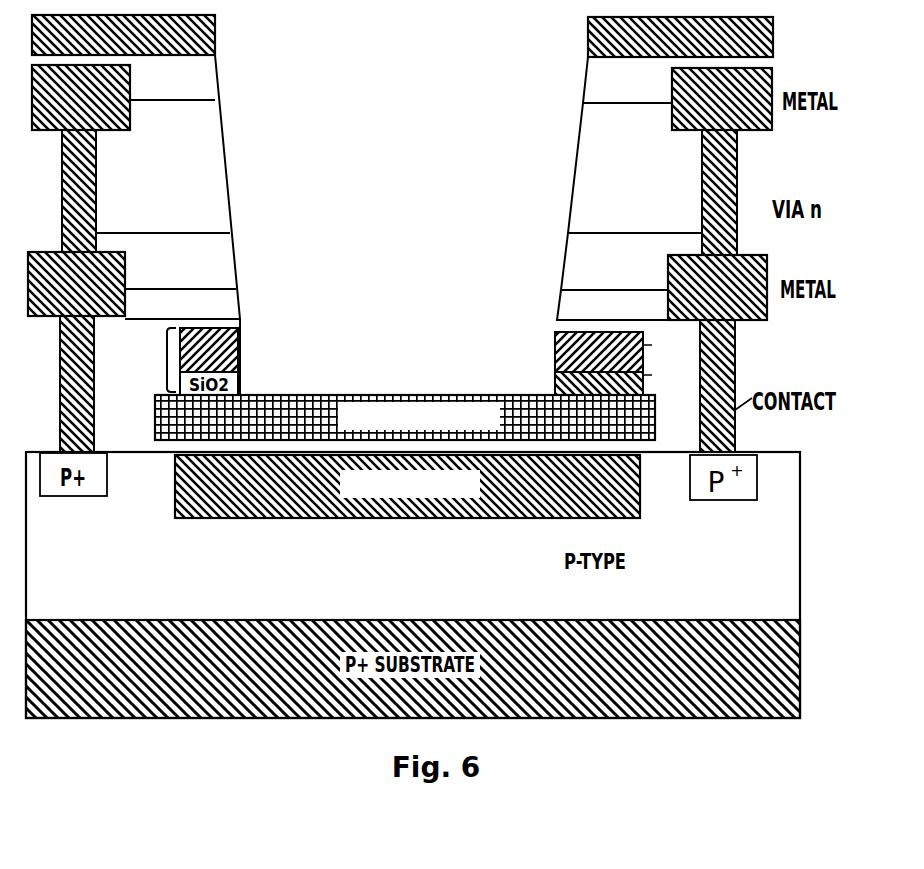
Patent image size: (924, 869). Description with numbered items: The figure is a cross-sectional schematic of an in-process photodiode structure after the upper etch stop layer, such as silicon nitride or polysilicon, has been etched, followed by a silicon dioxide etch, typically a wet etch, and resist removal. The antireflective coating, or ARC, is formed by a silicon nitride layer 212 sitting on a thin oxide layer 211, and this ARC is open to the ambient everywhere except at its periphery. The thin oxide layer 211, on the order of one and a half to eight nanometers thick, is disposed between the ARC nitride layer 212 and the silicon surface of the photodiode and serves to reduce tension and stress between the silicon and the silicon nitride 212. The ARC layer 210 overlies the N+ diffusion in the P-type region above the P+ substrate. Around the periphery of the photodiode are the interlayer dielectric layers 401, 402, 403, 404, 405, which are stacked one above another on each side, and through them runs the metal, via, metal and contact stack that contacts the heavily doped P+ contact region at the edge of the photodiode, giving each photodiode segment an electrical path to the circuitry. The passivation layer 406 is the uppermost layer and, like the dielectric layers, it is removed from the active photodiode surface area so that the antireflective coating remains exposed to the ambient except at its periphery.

The silicon nitride anti-reflective coating layer 210 is at (156, 397).
The thin oxide layer 211 is at (632, 450).
The silicon nitride layer 212 is at (655, 405).
The ILD layer 401 is at (572, 326).
The ILD layer 402 is at (612, 307).
The ILD layer 403 is at (614, 261).
The ILD layer 404 is at (635, 168).
The ILD layer 405 is at (627, 81).
The passivation layer 406 is at (773, 30).